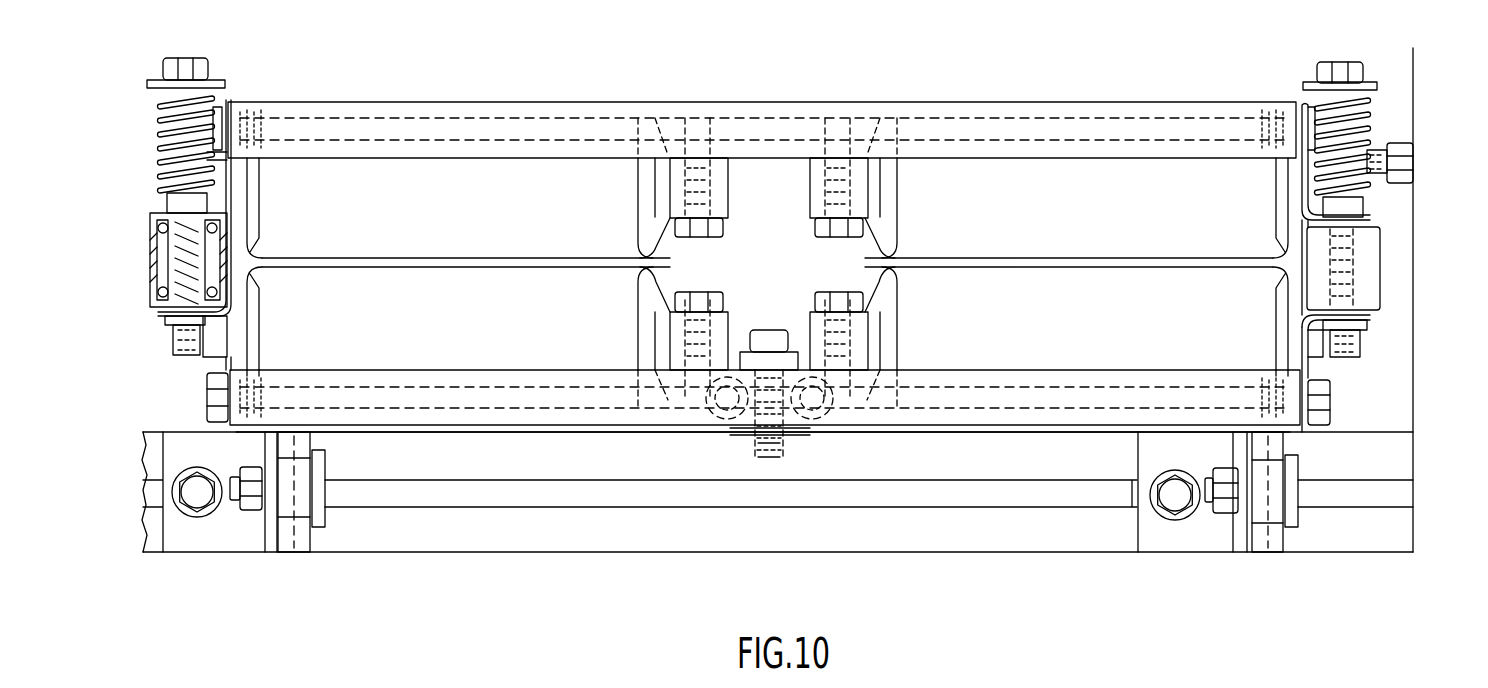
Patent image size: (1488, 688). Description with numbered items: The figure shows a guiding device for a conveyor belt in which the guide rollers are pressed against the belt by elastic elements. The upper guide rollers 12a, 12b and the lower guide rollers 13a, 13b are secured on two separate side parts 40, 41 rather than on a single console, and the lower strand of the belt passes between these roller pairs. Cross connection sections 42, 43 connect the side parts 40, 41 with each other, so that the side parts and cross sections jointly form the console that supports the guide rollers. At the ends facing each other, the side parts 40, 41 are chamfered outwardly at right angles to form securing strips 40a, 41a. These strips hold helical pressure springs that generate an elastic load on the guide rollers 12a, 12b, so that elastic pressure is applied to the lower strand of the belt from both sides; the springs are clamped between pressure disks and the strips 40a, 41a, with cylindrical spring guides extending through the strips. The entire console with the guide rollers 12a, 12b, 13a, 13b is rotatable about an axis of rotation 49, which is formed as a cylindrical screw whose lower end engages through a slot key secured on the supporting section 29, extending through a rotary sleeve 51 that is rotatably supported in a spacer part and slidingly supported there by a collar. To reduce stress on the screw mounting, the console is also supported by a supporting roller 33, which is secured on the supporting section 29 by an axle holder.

The guide roller 12a is at (527, 168).
The guide roller 12b is at (1121, 174).
The guide roller 13a is at (436, 276).
The guide roller 13b is at (1026, 286).
The supporting section 29 is at (1055, 553).
The supporting roller 33 is at (1260, 553).
The side part 40 is at (1297, 100).
The securing strip 40a is at (1370, 215).
The side part 41 is at (1308, 433).
The securing strip 41a is at (1370, 318).
The cross connection section 42 is at (975, 100).
The cross connection section 43 is at (1135, 368).
The axis of rotation 49 is at (755, 332).
The rotary sleeve 51 is at (788, 336).